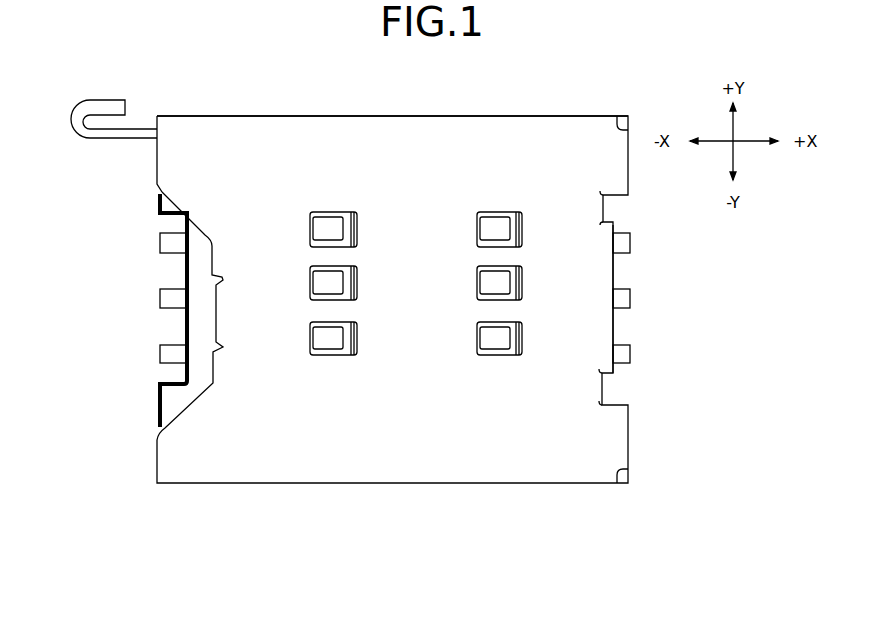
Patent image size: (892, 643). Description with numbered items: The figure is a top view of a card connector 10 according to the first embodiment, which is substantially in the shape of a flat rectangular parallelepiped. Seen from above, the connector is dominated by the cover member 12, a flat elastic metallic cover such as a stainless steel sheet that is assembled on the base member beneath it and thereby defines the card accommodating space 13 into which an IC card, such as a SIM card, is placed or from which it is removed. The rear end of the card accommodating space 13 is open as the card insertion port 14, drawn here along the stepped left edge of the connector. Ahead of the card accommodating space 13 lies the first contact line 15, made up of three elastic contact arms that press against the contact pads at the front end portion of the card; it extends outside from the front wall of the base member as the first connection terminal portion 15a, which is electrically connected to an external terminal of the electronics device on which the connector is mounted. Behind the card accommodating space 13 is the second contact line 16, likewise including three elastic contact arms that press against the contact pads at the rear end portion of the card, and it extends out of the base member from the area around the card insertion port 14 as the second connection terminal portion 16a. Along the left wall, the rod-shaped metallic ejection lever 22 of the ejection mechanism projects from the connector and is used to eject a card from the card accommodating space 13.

The card connector 10 is at (278, 492).
The cover member 12 is at (332, 116).
The card accommodating space 13 is at (210, 326).
The card insertion port 14 is at (186, 274).
The first contact line 15 is at (492, 230).
The first connection terminal portion 15a is at (630, 243).
The second contact line 16 is at (325, 230).
The second connection terminal portion 16a is at (163, 245).
The ejection lever 22 is at (96, 140).